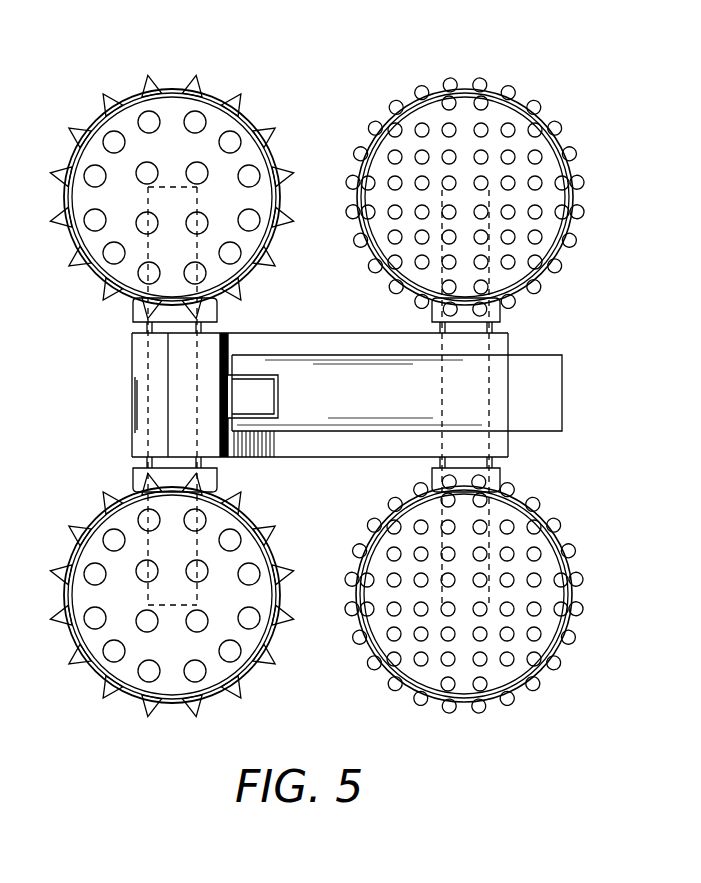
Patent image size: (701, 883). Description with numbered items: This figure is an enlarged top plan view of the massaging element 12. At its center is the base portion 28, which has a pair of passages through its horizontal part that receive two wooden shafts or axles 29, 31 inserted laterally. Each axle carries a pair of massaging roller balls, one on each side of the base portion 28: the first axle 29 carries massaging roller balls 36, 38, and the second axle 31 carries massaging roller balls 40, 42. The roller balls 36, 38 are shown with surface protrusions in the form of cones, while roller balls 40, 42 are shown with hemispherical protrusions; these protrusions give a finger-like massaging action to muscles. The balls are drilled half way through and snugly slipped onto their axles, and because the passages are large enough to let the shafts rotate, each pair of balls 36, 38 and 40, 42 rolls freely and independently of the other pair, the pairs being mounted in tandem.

The massaging element 12 is at (126, 419).
The base portion 28 is at (314, 333).
The shaft or axle 29 is at (132, 347).
The shaft or axle 31 is at (492, 372).
The massaging roller ball 36 is at (172, 88).
The massaging roller ball 38 is at (247, 668).
The massaging roller ball 40 is at (465, 90).
The massaging roller ball 42 is at (560, 540).